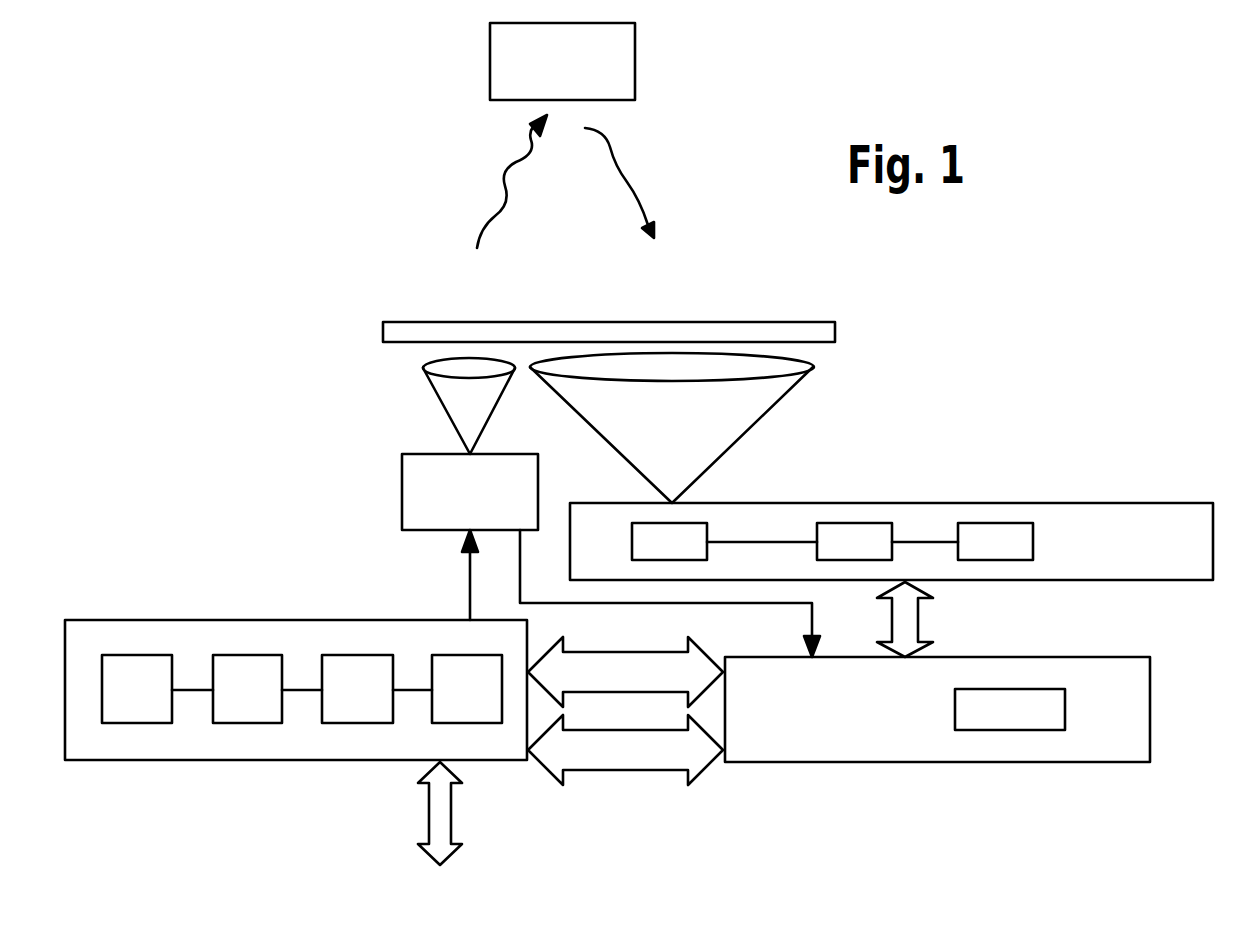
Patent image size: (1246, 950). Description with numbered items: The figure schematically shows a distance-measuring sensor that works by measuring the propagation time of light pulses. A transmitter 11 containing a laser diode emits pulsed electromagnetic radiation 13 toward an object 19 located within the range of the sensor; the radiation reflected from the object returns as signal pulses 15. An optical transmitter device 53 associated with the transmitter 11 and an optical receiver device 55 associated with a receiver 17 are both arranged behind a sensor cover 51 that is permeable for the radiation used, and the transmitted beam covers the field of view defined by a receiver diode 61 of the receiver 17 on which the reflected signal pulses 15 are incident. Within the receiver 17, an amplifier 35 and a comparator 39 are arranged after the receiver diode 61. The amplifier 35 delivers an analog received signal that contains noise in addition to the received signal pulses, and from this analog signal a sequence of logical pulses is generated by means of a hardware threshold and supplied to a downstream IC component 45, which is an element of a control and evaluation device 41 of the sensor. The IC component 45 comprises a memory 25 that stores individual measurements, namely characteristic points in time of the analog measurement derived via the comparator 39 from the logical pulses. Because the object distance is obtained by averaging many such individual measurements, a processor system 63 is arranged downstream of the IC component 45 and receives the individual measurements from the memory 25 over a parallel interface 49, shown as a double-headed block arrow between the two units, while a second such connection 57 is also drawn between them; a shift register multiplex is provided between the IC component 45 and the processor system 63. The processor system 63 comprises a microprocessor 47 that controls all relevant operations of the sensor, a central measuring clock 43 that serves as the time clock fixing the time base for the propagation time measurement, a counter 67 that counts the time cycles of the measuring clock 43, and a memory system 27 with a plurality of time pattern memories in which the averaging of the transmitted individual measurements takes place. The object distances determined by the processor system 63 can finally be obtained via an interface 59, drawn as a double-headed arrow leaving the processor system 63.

The transmitter 11 is at (415, 480).
The pulsed electromagnetic radiation 13 is at (502, 173).
The signal pulses 15 is at (628, 180).
The receiver 17 is at (1160, 525).
The object 19 is at (634, 57).
The memory 25 is at (1015, 710).
The memory system 27 is at (248, 708).
The amplifier 35 is at (857, 533).
The comparator 39 is at (993, 533).
The control and evaluation device 41 is at (785, 815).
The central measuring clock 43 is at (362, 708).
The IC component 45 is at (1115, 738).
The microprocessor 47 is at (135, 708).
The parallel interface 49 is at (650, 747).
The sensor cover 51 is at (785, 330).
The optical transmitter device 53 is at (442, 370).
The optical receiver device 55 is at (790, 366).
The data bus 57 is at (593, 682).
The interface 59 is at (438, 808).
The receiver diode 61 is at (697, 535).
The processor system 63 is at (116, 618).
The counter 67 is at (455, 668).